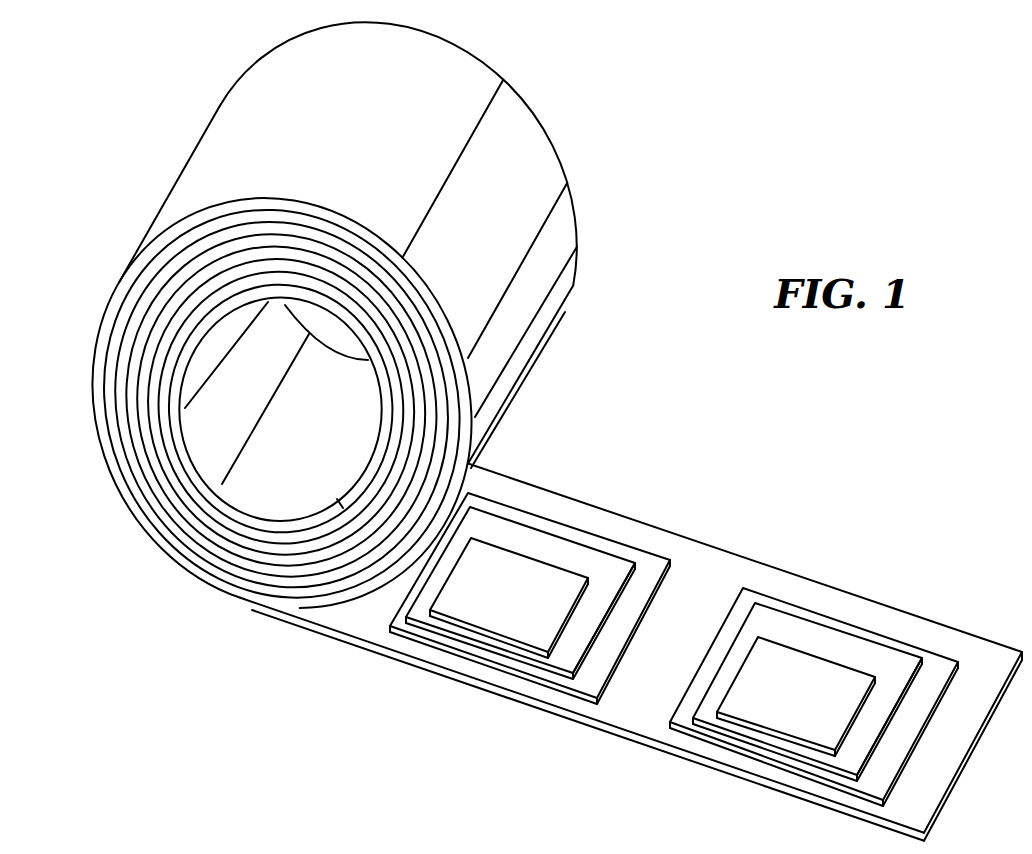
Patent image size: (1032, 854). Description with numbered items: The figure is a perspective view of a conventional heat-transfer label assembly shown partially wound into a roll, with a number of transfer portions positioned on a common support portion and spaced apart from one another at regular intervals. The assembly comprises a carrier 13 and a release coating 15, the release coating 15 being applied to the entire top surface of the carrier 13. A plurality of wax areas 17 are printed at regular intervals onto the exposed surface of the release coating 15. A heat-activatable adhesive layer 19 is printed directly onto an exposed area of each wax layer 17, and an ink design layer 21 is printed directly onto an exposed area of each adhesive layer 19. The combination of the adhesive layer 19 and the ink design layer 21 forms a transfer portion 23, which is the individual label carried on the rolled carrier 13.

The carrier 13 is at (532, 699).
The release coating 15 is at (724, 575).
The wax area 17 is at (647, 572).
The heat-activatable adhesive layer 19 is at (577, 563).
The ink design layer 21 is at (503, 575).
The transfer portion 23 is at (601, 644).